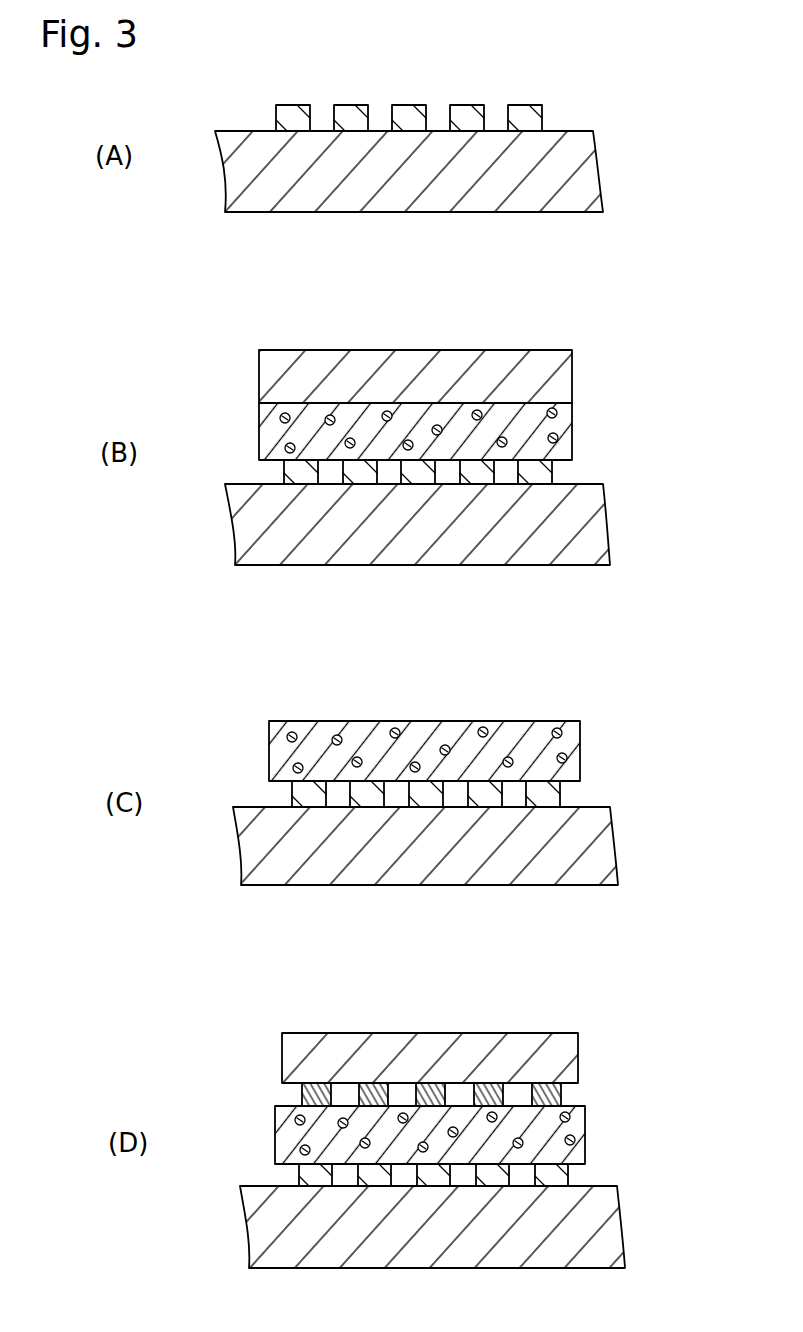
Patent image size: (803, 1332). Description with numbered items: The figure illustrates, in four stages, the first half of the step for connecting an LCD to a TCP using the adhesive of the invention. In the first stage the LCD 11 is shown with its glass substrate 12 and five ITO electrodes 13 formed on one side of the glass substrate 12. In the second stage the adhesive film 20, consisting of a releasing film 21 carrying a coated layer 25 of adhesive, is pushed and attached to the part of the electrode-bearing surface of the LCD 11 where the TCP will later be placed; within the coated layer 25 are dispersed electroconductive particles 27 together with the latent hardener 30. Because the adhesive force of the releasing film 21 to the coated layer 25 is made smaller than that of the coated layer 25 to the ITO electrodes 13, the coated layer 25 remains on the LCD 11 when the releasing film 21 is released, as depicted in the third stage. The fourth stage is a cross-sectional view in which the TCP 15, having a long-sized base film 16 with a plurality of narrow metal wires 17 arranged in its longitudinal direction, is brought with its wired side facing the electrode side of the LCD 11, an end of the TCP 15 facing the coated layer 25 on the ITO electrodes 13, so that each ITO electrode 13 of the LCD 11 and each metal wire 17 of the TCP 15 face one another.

The LCD 11 is at (484, 681).
The glass substrate 12 is at (600, 177).
The ITO electrodes 13 is at (542, 110).
The TCP 15 is at (517, 1076).
The base film 16 is at (578, 1065).
The metal wires 17 is at (503, 1088).
The adhesive film 20 is at (497, 390).
The releasing film 21 is at (572, 392).
The coated layer 25 is at (572, 410).
The electroconductive particle 27 is at (477, 411).
The latent hardener 30 is at (285, 444).